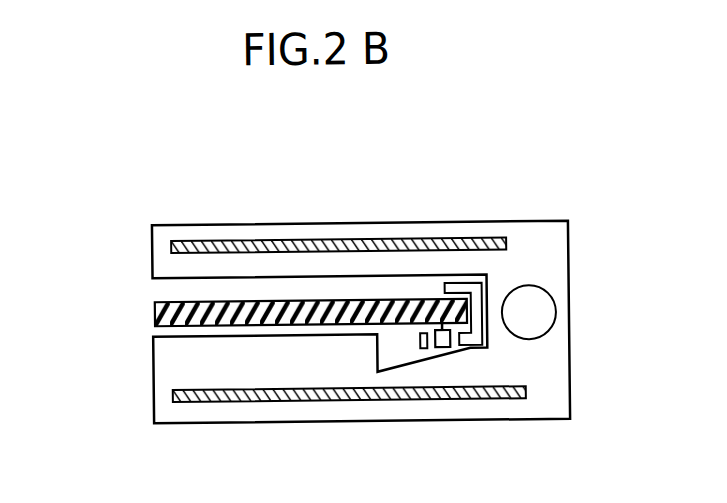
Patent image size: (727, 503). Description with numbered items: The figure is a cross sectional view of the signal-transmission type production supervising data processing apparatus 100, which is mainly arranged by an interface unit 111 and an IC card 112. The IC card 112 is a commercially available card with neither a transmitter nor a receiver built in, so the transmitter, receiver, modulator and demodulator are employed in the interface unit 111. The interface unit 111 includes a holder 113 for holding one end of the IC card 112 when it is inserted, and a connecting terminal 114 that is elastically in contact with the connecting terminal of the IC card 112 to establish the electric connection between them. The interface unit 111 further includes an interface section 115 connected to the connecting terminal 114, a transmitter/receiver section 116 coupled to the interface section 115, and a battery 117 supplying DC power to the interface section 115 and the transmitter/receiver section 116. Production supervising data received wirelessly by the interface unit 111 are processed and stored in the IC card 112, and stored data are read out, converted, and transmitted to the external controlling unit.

The signal-transmission type production supervising data processing apparatus 100 is at (109, 162).
The interface unit 111 is at (181, 238).
The IC card 112 is at (157, 310).
The holder 113 is at (483, 336).
The connecting terminal 114 is at (442, 351).
The interface section 115 is at (451, 238).
The transmitter/receiver section 116 is at (209, 400).
The battery 117 is at (547, 294).